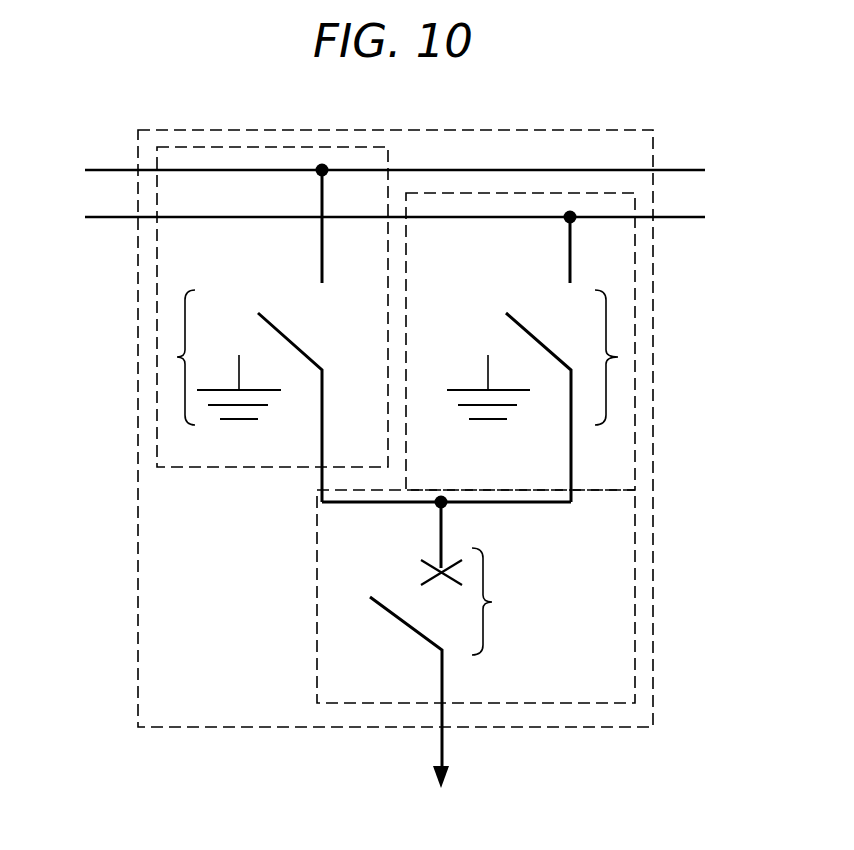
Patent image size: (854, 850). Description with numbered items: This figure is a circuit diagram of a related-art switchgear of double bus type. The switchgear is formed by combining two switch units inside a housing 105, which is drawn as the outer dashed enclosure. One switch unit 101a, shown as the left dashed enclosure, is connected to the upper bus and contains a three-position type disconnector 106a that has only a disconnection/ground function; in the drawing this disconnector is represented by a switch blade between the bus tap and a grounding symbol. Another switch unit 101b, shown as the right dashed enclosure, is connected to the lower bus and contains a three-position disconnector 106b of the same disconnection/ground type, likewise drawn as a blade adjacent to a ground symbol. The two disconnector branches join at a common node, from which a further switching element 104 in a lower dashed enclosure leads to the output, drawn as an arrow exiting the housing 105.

The housing 105 is at (653, 150).
The switch unit 101a is at (157, 275).
The another switch unit 101b is at (635, 275).
The three-position type disconnector 106a is at (173, 357).
The three-position disconnector 106b is at (622, 357).
The output switch 104 is at (476, 639).